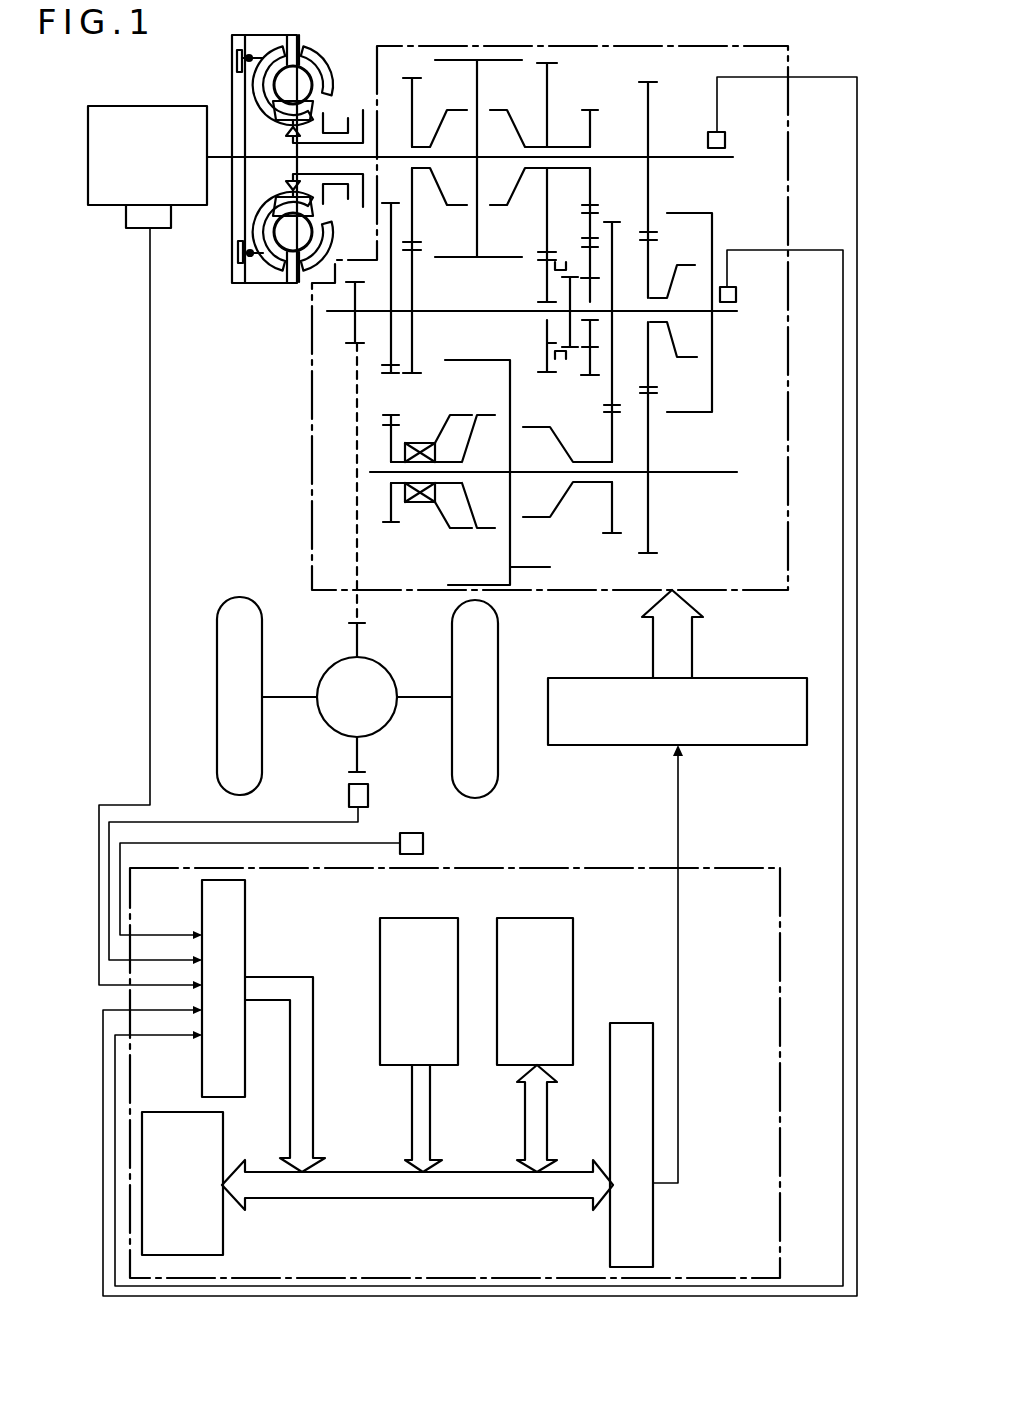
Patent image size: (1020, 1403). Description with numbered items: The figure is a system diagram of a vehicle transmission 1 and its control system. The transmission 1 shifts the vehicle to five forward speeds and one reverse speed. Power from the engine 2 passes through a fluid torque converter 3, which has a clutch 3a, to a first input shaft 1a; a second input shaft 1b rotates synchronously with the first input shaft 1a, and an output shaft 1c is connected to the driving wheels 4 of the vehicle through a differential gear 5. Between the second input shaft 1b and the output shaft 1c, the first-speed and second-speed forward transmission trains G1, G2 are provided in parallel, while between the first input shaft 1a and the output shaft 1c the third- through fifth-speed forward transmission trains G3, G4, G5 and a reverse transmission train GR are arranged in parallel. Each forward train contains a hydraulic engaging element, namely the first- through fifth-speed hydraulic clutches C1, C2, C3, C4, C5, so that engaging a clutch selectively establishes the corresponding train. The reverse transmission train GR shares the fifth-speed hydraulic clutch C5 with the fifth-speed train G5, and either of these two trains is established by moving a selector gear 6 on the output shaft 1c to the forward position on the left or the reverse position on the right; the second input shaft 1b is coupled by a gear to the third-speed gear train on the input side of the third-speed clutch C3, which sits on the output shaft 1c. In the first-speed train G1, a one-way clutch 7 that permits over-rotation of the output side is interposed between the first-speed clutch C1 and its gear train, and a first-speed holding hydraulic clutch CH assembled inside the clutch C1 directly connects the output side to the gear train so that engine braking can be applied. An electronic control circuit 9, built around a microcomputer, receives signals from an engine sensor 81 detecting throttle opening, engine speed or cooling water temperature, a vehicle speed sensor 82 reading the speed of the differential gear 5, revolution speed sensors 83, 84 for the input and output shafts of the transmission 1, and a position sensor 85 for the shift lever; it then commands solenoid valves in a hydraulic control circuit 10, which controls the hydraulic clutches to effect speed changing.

The transmission 1 is at (791, 62).
The first input shaft 1a is at (672, 155).
The second input shaft 1b is at (680, 470).
The output shaft 1c is at (447, 310).
The engine 2 is at (172, 114).
The fluid torque converter 3 is at (334, 58).
The clutch 3a is at (231, 36).
The driving wheels 4 is at (217, 706).
The differential gear 5 is at (380, 672).
The selector gear 6 is at (566, 357).
The one-way clutch 7 is at (420, 440).
The electronic control circuit 9 is at (780, 1140).
The hydraulic control circuit 10 is at (729, 677).
The engine sensor 81 is at (158, 231).
The vehicle speed sensor 82 is at (349, 790).
The revolution speed sensor 83 is at (726, 140).
The revolution speed sensor 84 is at (737, 293).
The position sensor 85 is at (423, 843).
The first-speed hydraulic clutch C1 is at (460, 402).
The second-speed hydraulic clutch C2 is at (523, 572).
The third-speed hydraulic clutch C3 is at (713, 232).
The fourth-speed hydraulic clutch C4 is at (450, 59).
The fifth-speed hydraulic clutch C5 is at (497, 57).
The first-speed holding hydraulic clutch CH is at (482, 538).
The first-speed forward transmission train G1 is at (393, 527).
The second-speed forward transmission train G2 is at (614, 536).
The third-speed forward transmission train G3 is at (648, 74).
The fourth-speed forward transmission train G4 is at (413, 70).
The fifth-speed forward transmission train G5 is at (550, 58).
The reverse transmission train GR is at (590, 104).